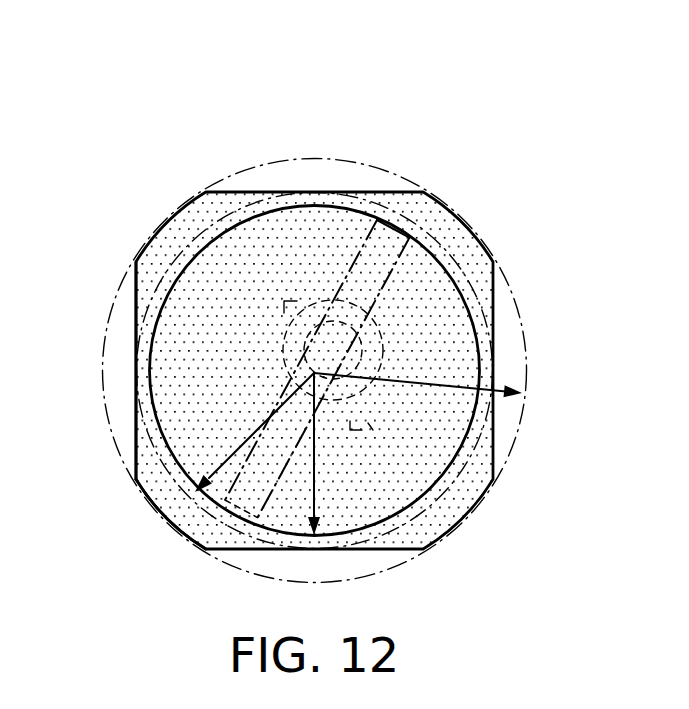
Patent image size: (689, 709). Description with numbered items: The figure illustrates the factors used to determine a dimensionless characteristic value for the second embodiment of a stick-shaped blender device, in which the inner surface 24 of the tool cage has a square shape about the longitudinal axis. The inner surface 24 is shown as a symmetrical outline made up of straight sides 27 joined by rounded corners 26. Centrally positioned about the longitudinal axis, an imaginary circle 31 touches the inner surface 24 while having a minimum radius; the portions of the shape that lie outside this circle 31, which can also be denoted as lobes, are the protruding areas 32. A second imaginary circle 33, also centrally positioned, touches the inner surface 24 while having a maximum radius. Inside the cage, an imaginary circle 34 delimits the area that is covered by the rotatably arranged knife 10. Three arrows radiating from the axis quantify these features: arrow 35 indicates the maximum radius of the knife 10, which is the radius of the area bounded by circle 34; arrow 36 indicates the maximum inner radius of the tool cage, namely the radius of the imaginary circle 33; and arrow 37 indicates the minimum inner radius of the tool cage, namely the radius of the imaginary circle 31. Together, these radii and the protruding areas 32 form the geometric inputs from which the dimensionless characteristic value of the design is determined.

The knife 10 is at (365, 253).
The inner surface 24 is at (495, 306).
The rounded corners 26 is at (163, 515).
The straight sides 27 is at (136, 322).
The imaginary circle of minimum radius 31 is at (467, 223).
The protruding areas 32 is at (177, 233).
The imaginary circle of maximum radius 33 is at (344, 160).
The imaginary circle delimiting knife area 34 is at (257, 214).
The arrow indicating maximum radius of the knife 35 is at (315, 449).
The arrow indicating maximum inner radius of the tool cage 36 is at (415, 380).
The arrow indicating minimum inner radius of the tool cage 37 is at (252, 432).